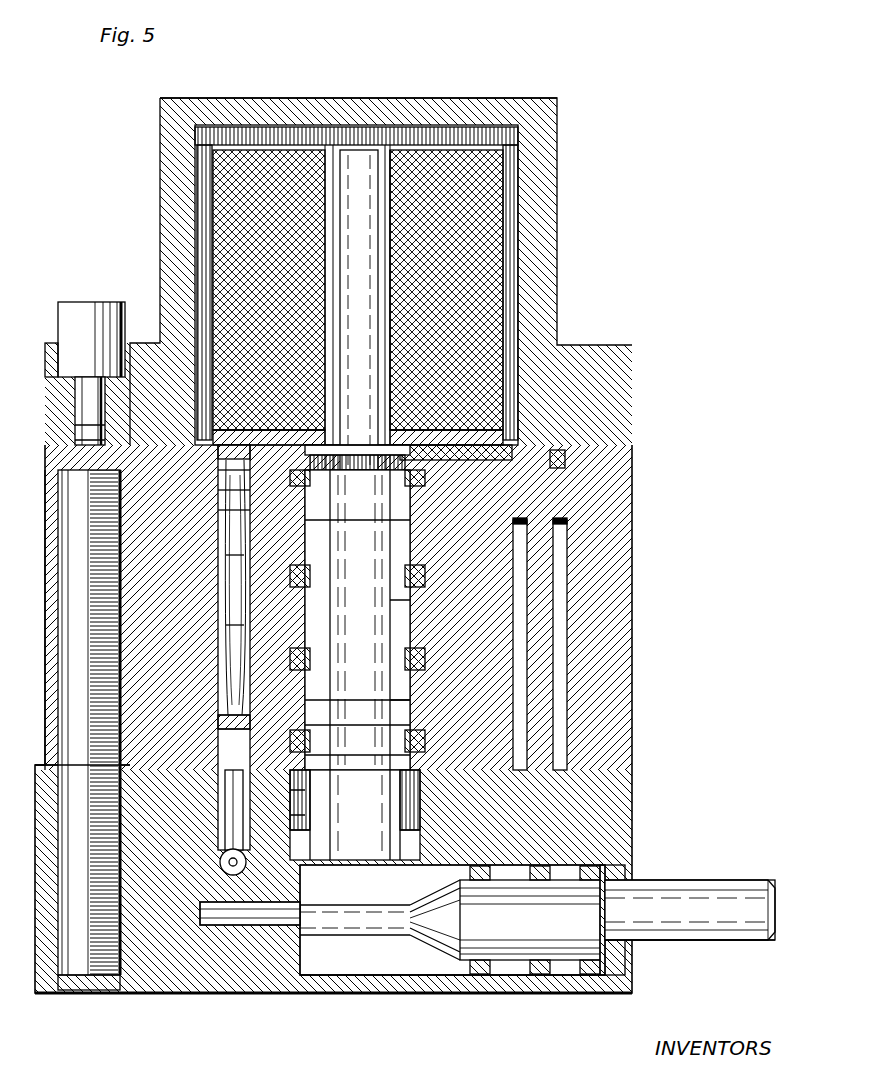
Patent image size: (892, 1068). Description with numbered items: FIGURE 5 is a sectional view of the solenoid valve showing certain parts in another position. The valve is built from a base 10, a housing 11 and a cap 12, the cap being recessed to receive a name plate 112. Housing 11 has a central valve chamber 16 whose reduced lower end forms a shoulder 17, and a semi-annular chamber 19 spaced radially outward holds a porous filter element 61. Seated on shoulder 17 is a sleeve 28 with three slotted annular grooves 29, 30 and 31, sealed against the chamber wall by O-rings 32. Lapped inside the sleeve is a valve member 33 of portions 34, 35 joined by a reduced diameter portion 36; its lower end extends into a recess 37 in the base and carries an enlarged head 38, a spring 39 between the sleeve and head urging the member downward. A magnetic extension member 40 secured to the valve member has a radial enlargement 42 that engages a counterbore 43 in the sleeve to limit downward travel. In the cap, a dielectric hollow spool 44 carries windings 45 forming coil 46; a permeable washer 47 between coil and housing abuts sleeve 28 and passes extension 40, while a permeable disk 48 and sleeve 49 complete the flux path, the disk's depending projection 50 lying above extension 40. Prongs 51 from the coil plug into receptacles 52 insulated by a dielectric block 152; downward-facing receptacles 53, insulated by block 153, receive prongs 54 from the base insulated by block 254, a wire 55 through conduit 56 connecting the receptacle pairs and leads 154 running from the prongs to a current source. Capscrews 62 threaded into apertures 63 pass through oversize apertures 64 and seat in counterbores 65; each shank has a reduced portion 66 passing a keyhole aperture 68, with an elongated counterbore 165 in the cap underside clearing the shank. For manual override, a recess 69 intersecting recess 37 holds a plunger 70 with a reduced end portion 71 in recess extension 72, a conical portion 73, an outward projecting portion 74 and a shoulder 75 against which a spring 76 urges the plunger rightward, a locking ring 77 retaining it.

The base 10 is at (230, 995).
The housing 11 is at (632, 577).
The cap 12 is at (557, 195).
The central valve chamber 16 is at (560, 530).
The shoulder 17 is at (415, 748).
The semi-annular chamber 19 is at (560, 548).
The sleeve 28 is at (375, 610).
The annular groove 29 is at (245, 535).
The annular groove 30 is at (395, 630).
The annular groove 31 is at (372, 705).
The O-rings 32 is at (425, 580).
The valve member 33 is at (535, 600).
The valve member portion 34 is at (495, 455).
The valve member portion 35 is at (415, 680).
The reduced diameter portion 36 is at (255, 650).
The recess 37 is at (415, 790).
The enlarged head 38 is at (350, 858).
The spring 39 is at (290, 790).
The extension member 40 is at (425, 432).
The radial enlargement 42 is at (320, 425).
The counterbore 43 is at (595, 470).
The dielectric hollow spool 44 is at (378, 250).
The electro-magnetic windings 45 is at (490, 245).
The coil 46 is at (475, 300).
The washer 47 is at (405, 462).
The disk 48 is at (518, 140).
The sleeve 49 is at (200, 177).
The projection 50 is at (340, 180).
The prongs 51 is at (200, 470).
The receptacles 52 is at (225, 490).
The receptacles 53 is at (205, 710).
The prongs 54 is at (205, 738).
The wire 55 is at (200, 625).
The connecting conduit 56 is at (205, 560).
The filter element 61 is at (560, 500).
The capscrews 62 is at (75, 652).
The apertures 63 is at (72, 985).
The apertures 64 is at (70, 590).
The counterbores 65 is at (62, 345).
The reduced diameter shank portion 66 is at (88, 410).
The keyhole shaped through aperture 68 is at (80, 432).
The recess 69 is at (375, 962).
The plunger 70 is at (680, 960).
The reduced diameter end portion 71 is at (345, 880).
The reduced diameter extension 72 is at (245, 928).
The conical portion 73 is at (445, 915).
The projecting portion 74 is at (720, 890).
The shoulder 75 is at (595, 925).
The spring 76 is at (522, 950).
The locking ring 77 is at (615, 870).
The name plate 112 is at (385, 98).
The dielectric sleeve or block 152 is at (225, 510).
The dielectric sleeve or block 153 is at (120, 770).
The leads 154 is at (222, 872).
The elongated counterbore 165 is at (108, 302).
The dielectric sleeve or block 254 is at (232, 810).